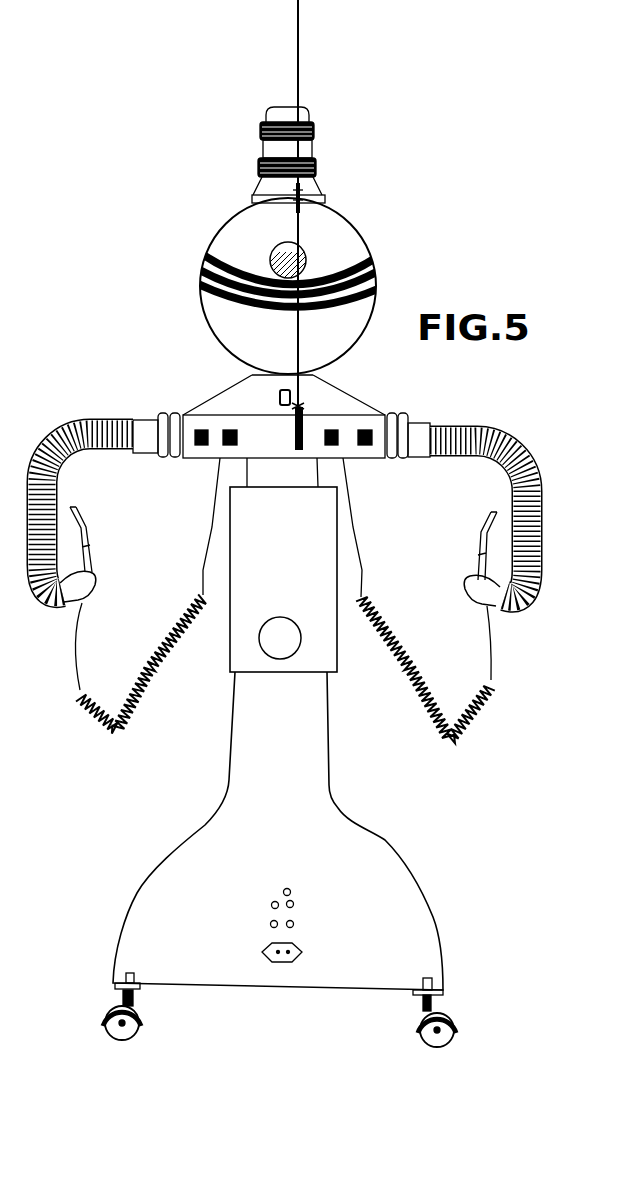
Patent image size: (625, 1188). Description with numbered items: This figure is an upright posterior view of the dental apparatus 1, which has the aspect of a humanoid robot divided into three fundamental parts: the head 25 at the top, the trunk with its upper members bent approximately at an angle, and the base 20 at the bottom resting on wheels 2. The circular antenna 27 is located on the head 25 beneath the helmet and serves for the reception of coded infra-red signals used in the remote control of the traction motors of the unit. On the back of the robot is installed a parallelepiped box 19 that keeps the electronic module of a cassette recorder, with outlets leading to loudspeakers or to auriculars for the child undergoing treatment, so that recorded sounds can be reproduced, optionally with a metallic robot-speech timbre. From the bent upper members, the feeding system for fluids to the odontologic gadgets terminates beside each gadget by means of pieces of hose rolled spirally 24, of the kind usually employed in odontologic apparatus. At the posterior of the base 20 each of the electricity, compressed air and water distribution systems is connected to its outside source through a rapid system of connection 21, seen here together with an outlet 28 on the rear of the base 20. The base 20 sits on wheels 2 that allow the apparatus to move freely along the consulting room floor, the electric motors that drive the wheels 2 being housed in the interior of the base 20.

The dental apparatus 1 is at (238, 398).
The wheels 2 is at (443, 1023).
The parallelepiped box 19 is at (320, 548).
The base 20 is at (200, 870).
The rapid system of connection 21 is at (294, 902).
The pieces of hose rolled spirally 24 is at (167, 675).
The head 25 is at (240, 228).
The antenna 27 is at (327, 200).
The power outlet 28 is at (294, 924).